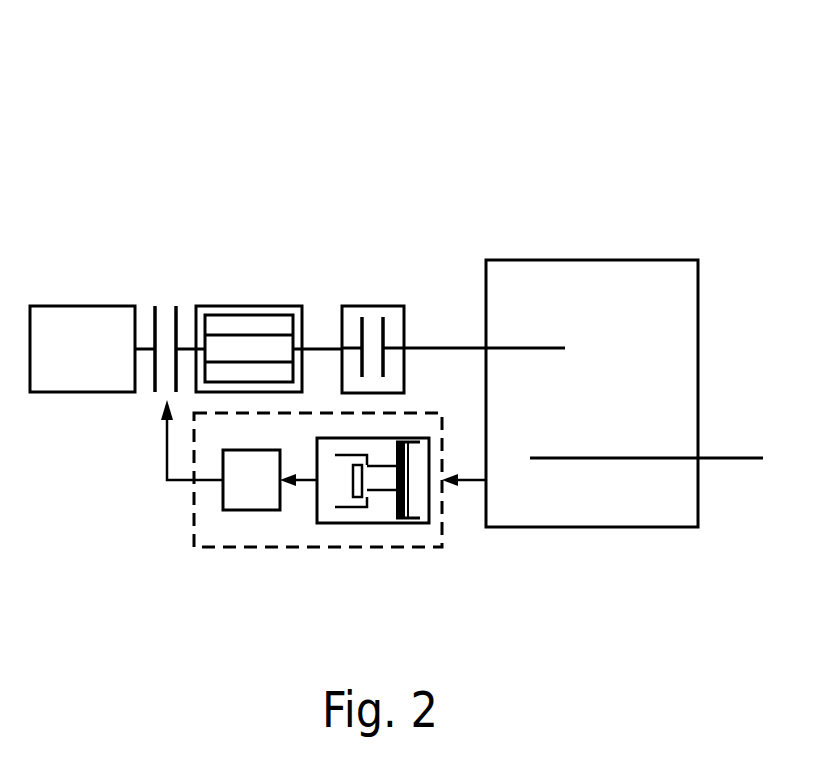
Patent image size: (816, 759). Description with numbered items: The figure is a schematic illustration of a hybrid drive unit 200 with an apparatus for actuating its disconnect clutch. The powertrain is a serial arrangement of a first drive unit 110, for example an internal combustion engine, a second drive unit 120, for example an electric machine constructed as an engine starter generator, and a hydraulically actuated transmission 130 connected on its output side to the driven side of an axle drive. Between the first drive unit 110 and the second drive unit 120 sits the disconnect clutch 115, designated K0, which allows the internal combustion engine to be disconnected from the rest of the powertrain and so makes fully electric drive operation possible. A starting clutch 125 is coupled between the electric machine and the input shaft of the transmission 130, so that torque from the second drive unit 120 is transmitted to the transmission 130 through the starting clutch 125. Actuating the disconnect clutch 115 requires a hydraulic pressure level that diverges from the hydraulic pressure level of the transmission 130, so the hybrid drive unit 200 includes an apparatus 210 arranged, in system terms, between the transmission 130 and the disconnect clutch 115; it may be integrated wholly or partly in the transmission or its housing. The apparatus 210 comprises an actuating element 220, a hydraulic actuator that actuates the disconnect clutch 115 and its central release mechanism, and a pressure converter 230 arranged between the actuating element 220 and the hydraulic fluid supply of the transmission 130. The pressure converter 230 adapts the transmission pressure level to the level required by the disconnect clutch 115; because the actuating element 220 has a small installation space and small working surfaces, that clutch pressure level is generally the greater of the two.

The hybrid drive unit 200 is at (512, 190).
The first drive unit 110 is at (71, 367).
The disconnect clutch 115 is at (155, 390).
The second drive unit 120 is at (300, 306).
The starting clutch 125 is at (407, 315).
The transmission 130 is at (698, 318).
The apparatus for actuating the disconnect clutch 210 is at (355, 548).
The actuating element 220 is at (248, 510).
The pressure converter 230 is at (428, 523).